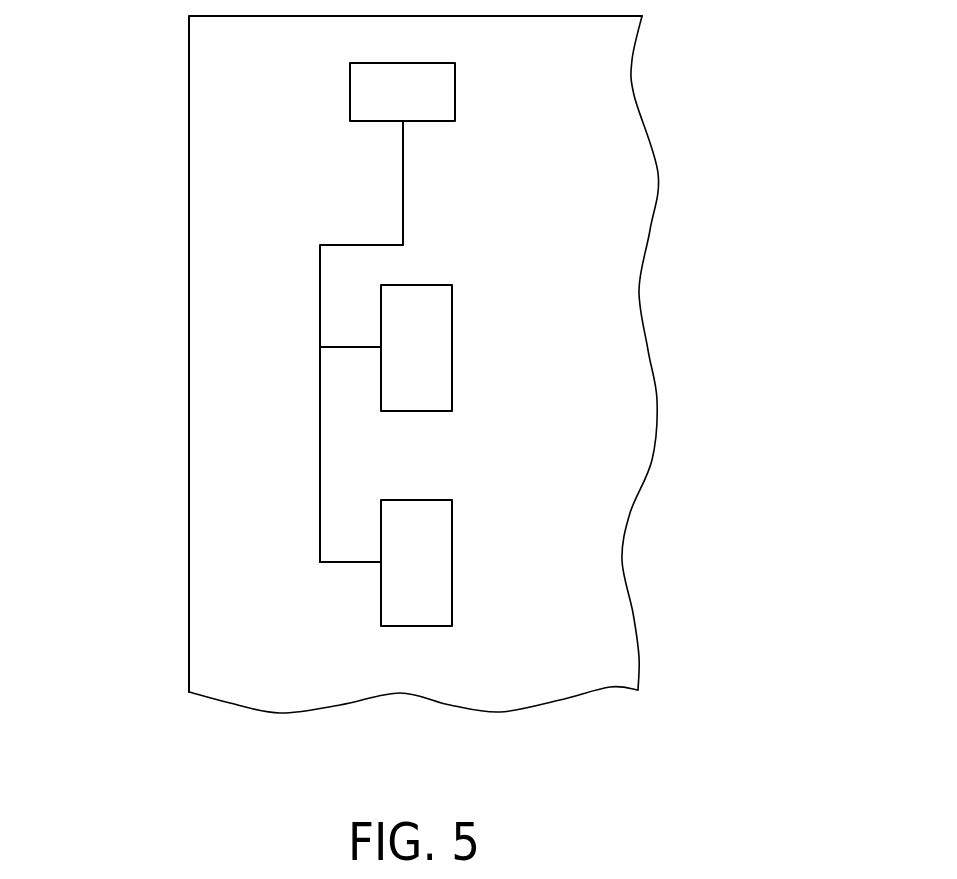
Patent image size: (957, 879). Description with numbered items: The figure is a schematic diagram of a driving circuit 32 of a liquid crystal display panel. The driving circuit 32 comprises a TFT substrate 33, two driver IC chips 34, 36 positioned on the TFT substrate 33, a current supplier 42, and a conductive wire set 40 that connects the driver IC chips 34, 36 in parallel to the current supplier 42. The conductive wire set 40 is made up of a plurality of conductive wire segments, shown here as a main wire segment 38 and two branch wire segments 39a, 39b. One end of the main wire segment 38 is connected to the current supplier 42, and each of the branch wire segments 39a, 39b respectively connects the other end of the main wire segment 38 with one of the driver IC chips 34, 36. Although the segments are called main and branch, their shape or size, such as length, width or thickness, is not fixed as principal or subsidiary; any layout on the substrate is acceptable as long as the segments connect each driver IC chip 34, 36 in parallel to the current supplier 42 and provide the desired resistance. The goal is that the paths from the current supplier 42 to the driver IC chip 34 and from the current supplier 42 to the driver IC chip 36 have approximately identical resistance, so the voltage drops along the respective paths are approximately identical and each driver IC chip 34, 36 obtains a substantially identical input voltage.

The driving circuit 32 is at (793, 148).
The TFT substrate 33 is at (633, 365).
The driver IC chip 34 is at (452, 347).
The driver IC chip 36 is at (452, 562).
The main wire segment 38 is at (320, 297).
The branch wire segment 39a is at (350, 347).
The branch wire segment 39b is at (350, 562).
The conductive wire set 40 is at (90, 295).
The current supplier 42 is at (455, 88).